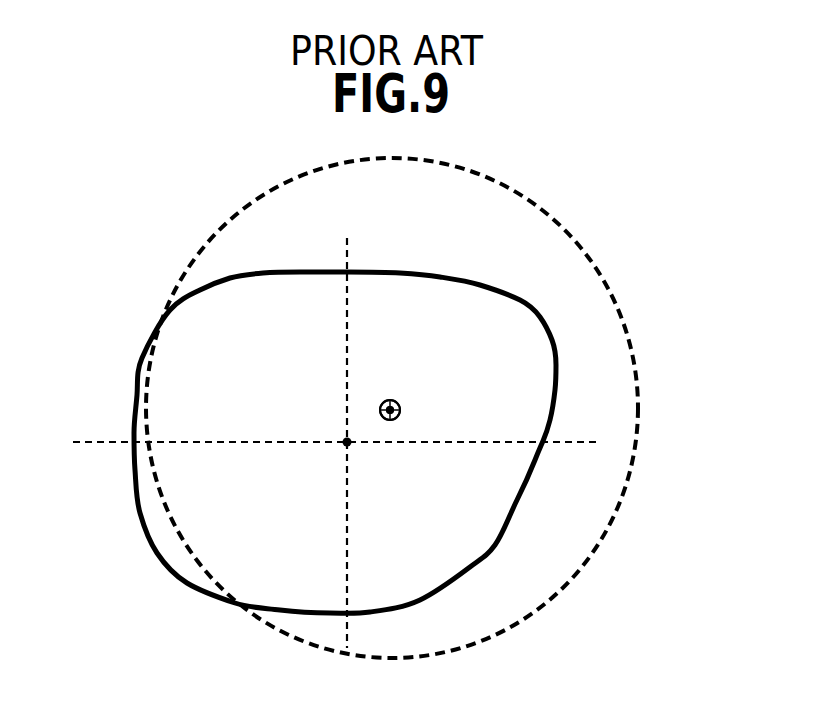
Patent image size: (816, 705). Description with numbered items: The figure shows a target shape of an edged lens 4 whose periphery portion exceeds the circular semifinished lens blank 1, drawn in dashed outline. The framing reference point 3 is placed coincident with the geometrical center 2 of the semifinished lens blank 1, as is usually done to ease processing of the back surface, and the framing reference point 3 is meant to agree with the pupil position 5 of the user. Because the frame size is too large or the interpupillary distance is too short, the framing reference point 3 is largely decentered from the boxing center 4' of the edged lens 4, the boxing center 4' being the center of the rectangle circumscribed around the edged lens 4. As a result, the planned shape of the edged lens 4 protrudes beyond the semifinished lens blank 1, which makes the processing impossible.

The semifinished lens blank 1 is at (525, 195).
The geometrical center 2 is at (385, 420).
The framing reference point 3 is at (395, 420).
The edged lens 4 is at (411, 442).
The boxing center 4' is at (332, 487).
The pupil position 5 is at (400, 405).